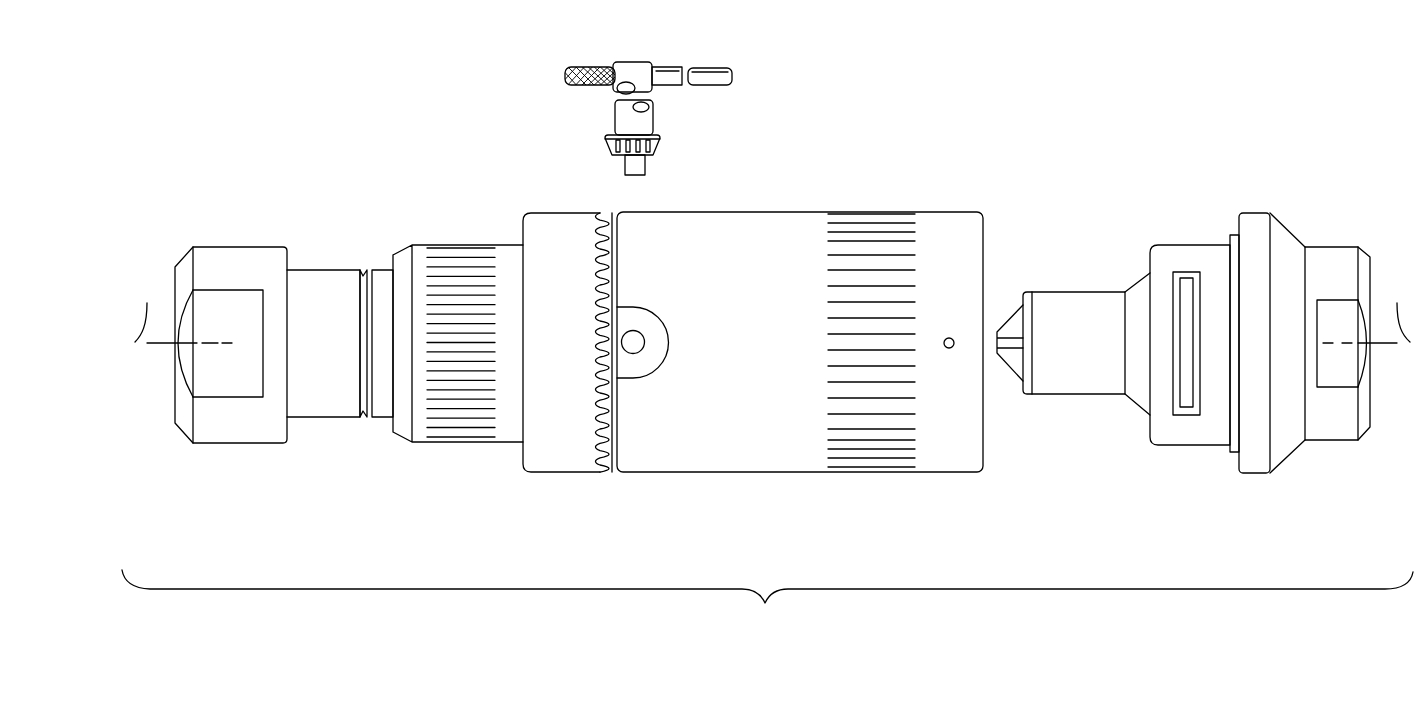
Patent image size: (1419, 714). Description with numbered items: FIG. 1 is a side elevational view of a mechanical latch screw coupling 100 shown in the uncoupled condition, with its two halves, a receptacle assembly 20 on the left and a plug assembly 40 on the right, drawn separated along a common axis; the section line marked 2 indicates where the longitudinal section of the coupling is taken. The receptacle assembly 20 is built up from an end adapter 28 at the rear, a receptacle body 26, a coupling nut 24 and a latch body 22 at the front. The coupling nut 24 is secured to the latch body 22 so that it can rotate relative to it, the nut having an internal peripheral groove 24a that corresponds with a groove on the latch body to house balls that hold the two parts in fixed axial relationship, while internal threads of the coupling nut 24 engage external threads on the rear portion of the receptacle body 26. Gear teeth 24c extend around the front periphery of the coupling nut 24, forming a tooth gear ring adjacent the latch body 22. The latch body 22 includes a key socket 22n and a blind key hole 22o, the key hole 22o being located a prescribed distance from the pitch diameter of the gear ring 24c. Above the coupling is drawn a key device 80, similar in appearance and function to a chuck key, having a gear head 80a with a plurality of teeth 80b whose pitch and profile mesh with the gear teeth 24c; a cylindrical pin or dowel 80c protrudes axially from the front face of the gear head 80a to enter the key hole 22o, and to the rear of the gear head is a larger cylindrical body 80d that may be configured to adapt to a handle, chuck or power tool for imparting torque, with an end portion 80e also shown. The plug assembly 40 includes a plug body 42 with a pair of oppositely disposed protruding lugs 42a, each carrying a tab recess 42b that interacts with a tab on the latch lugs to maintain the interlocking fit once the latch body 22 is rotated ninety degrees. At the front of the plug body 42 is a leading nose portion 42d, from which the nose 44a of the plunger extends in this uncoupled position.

The mechanical latch screw coupling 100 is at (395, 187).
The receptacle assembly 20 is at (522, 203).
The end adapter 28 is at (265, 246).
The receptacle body 26 is at (380, 268).
The internal peripheral groove 24a is at (465, 245).
The coupling nut 24 is at (563, 212).
The gear teeth 24c is at (613, 333).
The latch body 22 is at (803, 211).
The blind key hole 22o is at (645, 335).
The key socket 22n is at (647, 376).
The key device 80 is at (632, 60).
The gear head 80a is at (657, 118).
The teeth 80b is at (608, 150).
The cylindrical pin or dowel 80c is at (643, 163).
The cylindrical body 80d is at (647, 110).
The wrench cap 80e is at (718, 68).
The nose 44a is at (1002, 323).
The leading nose portion 42d is at (1070, 291).
The protruding lugs 42a is at (1173, 302).
The tab recess 42b is at (1193, 342).
The plug assembly 40 is at (1253, 212).
The plug body 42 is at (1300, 245).
The section line 2- 2 is at (772, 307).